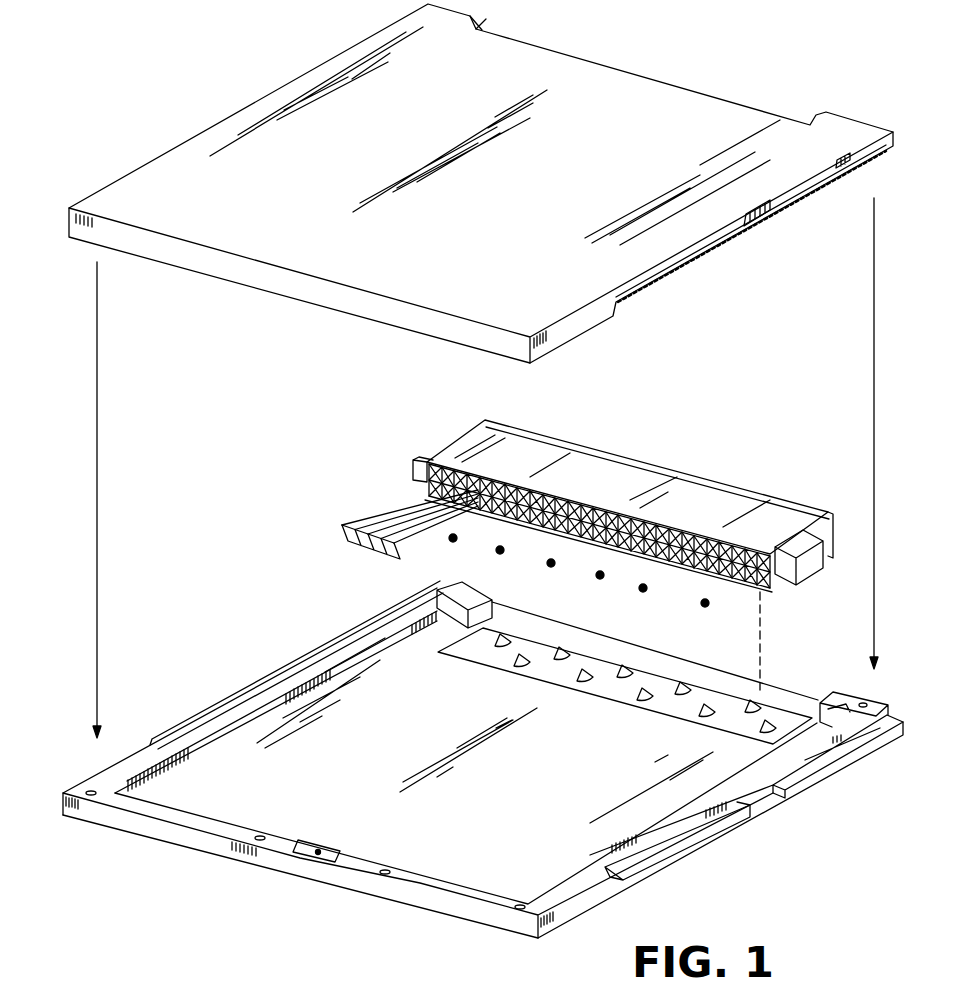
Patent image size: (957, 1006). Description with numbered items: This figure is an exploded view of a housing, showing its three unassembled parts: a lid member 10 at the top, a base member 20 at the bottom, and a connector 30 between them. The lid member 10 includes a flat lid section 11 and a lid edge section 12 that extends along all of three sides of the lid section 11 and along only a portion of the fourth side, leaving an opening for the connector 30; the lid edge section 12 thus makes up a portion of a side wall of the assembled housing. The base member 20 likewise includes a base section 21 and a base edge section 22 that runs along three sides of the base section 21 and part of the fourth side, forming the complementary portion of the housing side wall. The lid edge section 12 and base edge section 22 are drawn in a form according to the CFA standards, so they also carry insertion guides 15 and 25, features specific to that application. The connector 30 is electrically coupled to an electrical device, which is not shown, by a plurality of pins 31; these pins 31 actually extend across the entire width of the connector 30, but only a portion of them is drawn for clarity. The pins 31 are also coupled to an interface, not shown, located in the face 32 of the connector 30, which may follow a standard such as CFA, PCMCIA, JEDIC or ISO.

The lid member 10 is at (54, 212).
The lid section 11 is at (563, 85).
The lid edge section 12 is at (658, 271).
The insertion guide 15 is at (762, 220).
The base member 20 is at (535, 950).
The base section 21 is at (247, 763).
The base edge section 22 is at (188, 838).
The insertion guide 25 is at (688, 825).
The connector 30 is at (448, 425).
The pins 31 is at (373, 510).
The face 32 is at (834, 541).